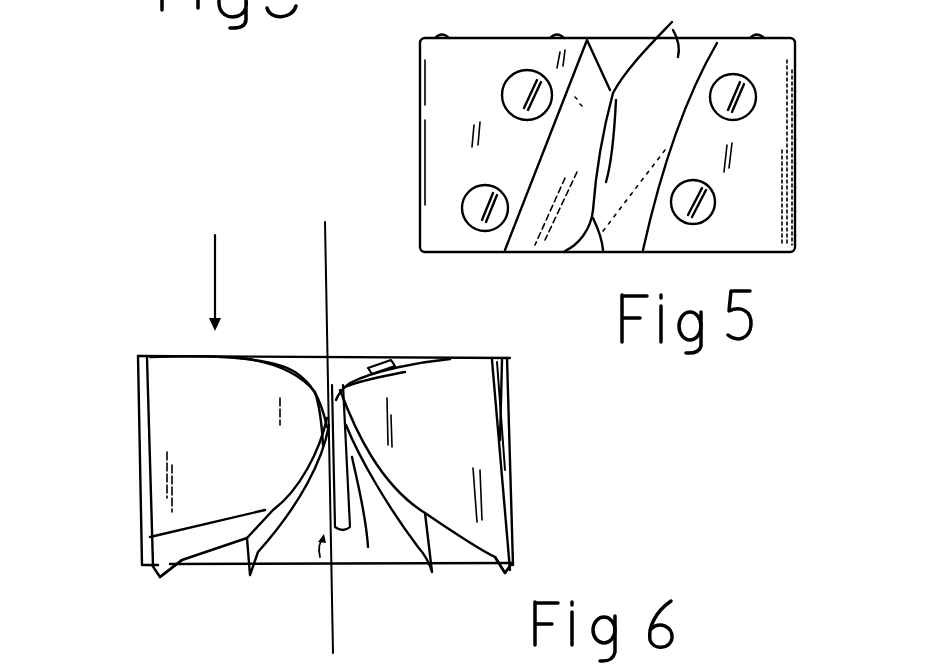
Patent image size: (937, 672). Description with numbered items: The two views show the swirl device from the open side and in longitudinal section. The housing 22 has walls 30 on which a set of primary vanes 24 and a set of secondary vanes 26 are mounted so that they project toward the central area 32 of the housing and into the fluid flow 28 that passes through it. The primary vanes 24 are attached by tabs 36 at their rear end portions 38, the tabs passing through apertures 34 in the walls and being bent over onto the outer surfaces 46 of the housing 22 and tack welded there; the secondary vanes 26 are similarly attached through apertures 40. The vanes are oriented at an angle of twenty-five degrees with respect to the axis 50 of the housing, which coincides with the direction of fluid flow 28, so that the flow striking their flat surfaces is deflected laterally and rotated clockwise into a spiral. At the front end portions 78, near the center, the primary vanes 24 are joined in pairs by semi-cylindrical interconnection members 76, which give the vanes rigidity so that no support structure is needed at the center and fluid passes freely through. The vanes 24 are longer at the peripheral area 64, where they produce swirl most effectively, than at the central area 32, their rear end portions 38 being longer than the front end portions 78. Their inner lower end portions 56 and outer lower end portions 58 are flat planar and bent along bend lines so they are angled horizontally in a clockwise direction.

In FIG. 6, the housing 22 is at (170, 346).
In FIG. 6, the primary vanes 24 is at (235, 424).
In FIG. 6, the secondary vanes 26 is at (334, 380).
In FIG. 6, the fluid flow 28 is at (214, 263).
In FIG. 6, the walls 30 is at (302, 363).
In FIG. 6, the central area 32 is at (317, 572).
In FIG. 5, the apertures 34 is at (477, 188).
In FIG. 6, the apertures 34 is at (498, 353).
In FIG. 5, the tabs 36 is at (513, 95).
In FIG. 6, the rear end portions 38 is at (483, 447).
In FIG. 6, the apertures 40 is at (368, 547).
In FIG. 5, the outer surfaces 46 is at (450, 110).
In FIG. 6, the axis 50 is at (327, 257).
In FIG. 6, the inner lower end portions 56 is at (150, 537).
In FIG. 6, the outer lower end portions 58 is at (155, 575).
In FIG. 6, the peripheral area 64 is at (475, 563).
In FIG. 5, the interconnection members 76 is at (676, 28).
In FIG. 6, the front end portions 78 is at (353, 402).